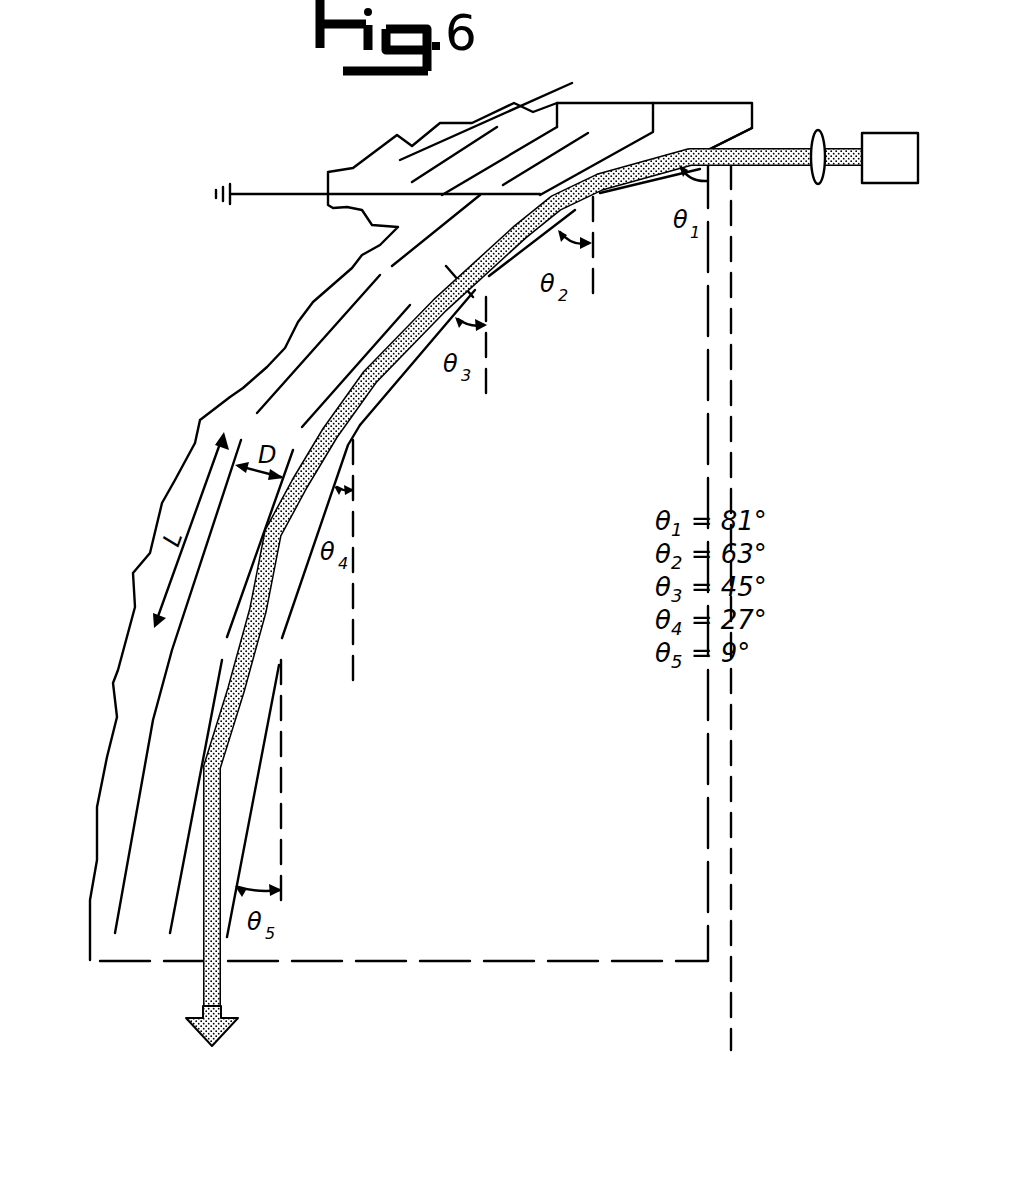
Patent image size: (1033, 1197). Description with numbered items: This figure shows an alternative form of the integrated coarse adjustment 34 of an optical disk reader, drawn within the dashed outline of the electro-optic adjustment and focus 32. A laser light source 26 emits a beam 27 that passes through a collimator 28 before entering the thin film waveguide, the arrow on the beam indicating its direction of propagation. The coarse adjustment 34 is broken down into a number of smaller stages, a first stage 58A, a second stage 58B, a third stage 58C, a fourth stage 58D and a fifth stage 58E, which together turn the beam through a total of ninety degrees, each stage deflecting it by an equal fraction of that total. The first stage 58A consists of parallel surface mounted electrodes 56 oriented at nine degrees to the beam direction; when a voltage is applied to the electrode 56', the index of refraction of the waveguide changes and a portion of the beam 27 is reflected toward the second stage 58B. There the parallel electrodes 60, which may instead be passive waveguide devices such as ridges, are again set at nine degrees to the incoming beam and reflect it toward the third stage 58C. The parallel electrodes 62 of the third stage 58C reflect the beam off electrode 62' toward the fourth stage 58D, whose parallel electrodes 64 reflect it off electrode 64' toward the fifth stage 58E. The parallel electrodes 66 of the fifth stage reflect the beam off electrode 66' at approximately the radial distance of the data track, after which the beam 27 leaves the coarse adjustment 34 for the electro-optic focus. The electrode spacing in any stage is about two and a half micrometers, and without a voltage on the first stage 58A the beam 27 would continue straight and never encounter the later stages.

The laser light source 26 is at (897, 133).
The beam 27 is at (794, 172).
The collimator 28 is at (820, 132).
The electro-optic adjustment and focus 32 is at (731, 788).
The integrated coarse adjustment 34 is at (282, 251).
The parallel surface mounted electrodes 56 is at (556, 163).
The surface mounted electrode 56' is at (722, 102).
The first stage 58A is at (614, 215).
The second stage 58B is at (527, 287).
The third stage 58C is at (404, 407).
The fourth stage 58D is at (364, 478).
The fifth stage 58E is at (314, 790).
The parallel electrodes 60 is at (468, 279).
The parallel electrodes 62 is at (360, 358).
The electrode 62' is at (288, 344).
The parallel electrodes 64 is at (321, 544).
The electrode 64' is at (231, 691).
The parallel electrodes 66 is at (288, 801).
The electrode 66' is at (178, 686).